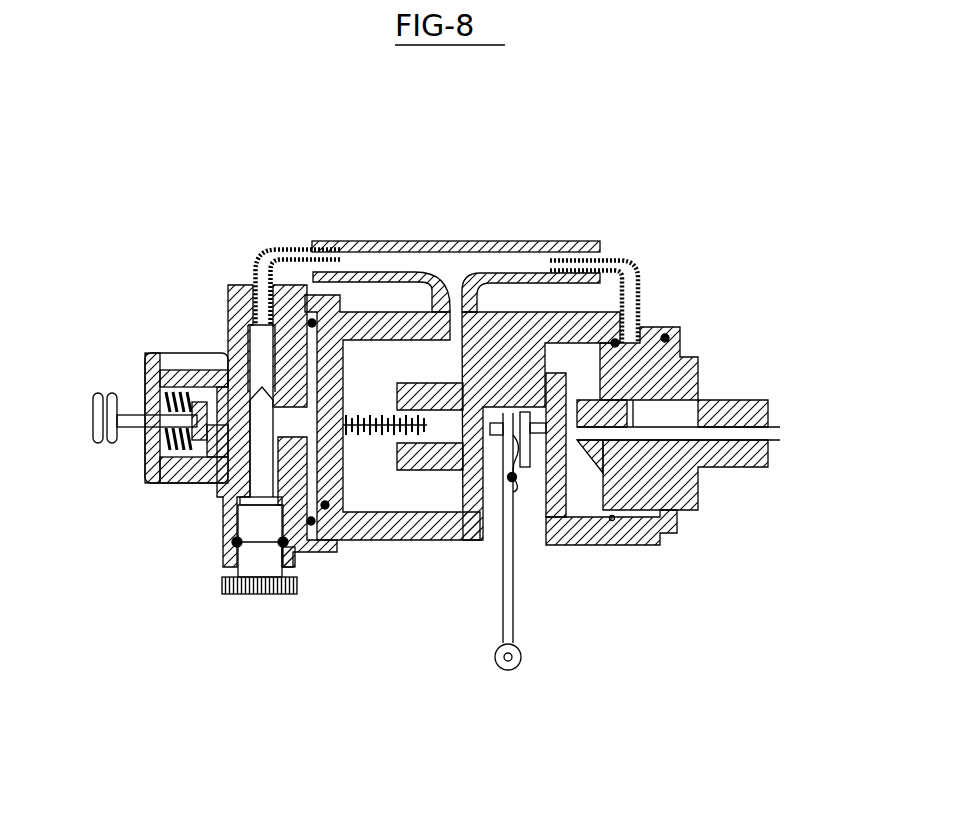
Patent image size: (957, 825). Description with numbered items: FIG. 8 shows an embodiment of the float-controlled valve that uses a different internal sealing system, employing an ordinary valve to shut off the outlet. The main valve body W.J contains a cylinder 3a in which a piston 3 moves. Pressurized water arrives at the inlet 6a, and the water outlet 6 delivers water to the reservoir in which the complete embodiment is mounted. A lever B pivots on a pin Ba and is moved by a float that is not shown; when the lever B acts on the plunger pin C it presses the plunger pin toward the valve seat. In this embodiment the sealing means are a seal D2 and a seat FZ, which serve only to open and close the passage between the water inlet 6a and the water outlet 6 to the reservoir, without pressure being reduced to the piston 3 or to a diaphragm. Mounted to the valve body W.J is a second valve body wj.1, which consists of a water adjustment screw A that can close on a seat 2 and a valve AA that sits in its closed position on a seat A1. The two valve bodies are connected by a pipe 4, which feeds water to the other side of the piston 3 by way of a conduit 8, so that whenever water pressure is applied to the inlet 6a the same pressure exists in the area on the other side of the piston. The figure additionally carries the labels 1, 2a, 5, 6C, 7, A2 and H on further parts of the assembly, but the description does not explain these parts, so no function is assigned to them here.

The adjusting knob 1 is at (92, 449).
The seat 2 is at (248, 385).
The cap 2a is at (192, 368).
The piston 3 is at (270, 252).
The cylinder 3a is at (233, 285).
The pipe 4 is at (374, 240).
The spring 5 is at (368, 442).
The water outlet 6 is at (576, 547).
The inlet 6a is at (726, 426).
The lower flange 6C is at (737, 455).
The body block 7 is at (388, 445).
The conduit 8 is at (463, 284).
The water adjustment screw A is at (238, 597).
The seat A1 is at (224, 431).
The side wall A2 is at (312, 550).
The valve AA is at (190, 442).
The lever B is at (512, 630).
The pin Ba is at (513, 480).
The plunger pin C is at (558, 392).
The seal D2 is at (578, 444).
The seat FZ is at (582, 447).
The return tube H is at (637, 301).
The valve body W.J is at (439, 542).
The valve body wj.1 is at (226, 474).